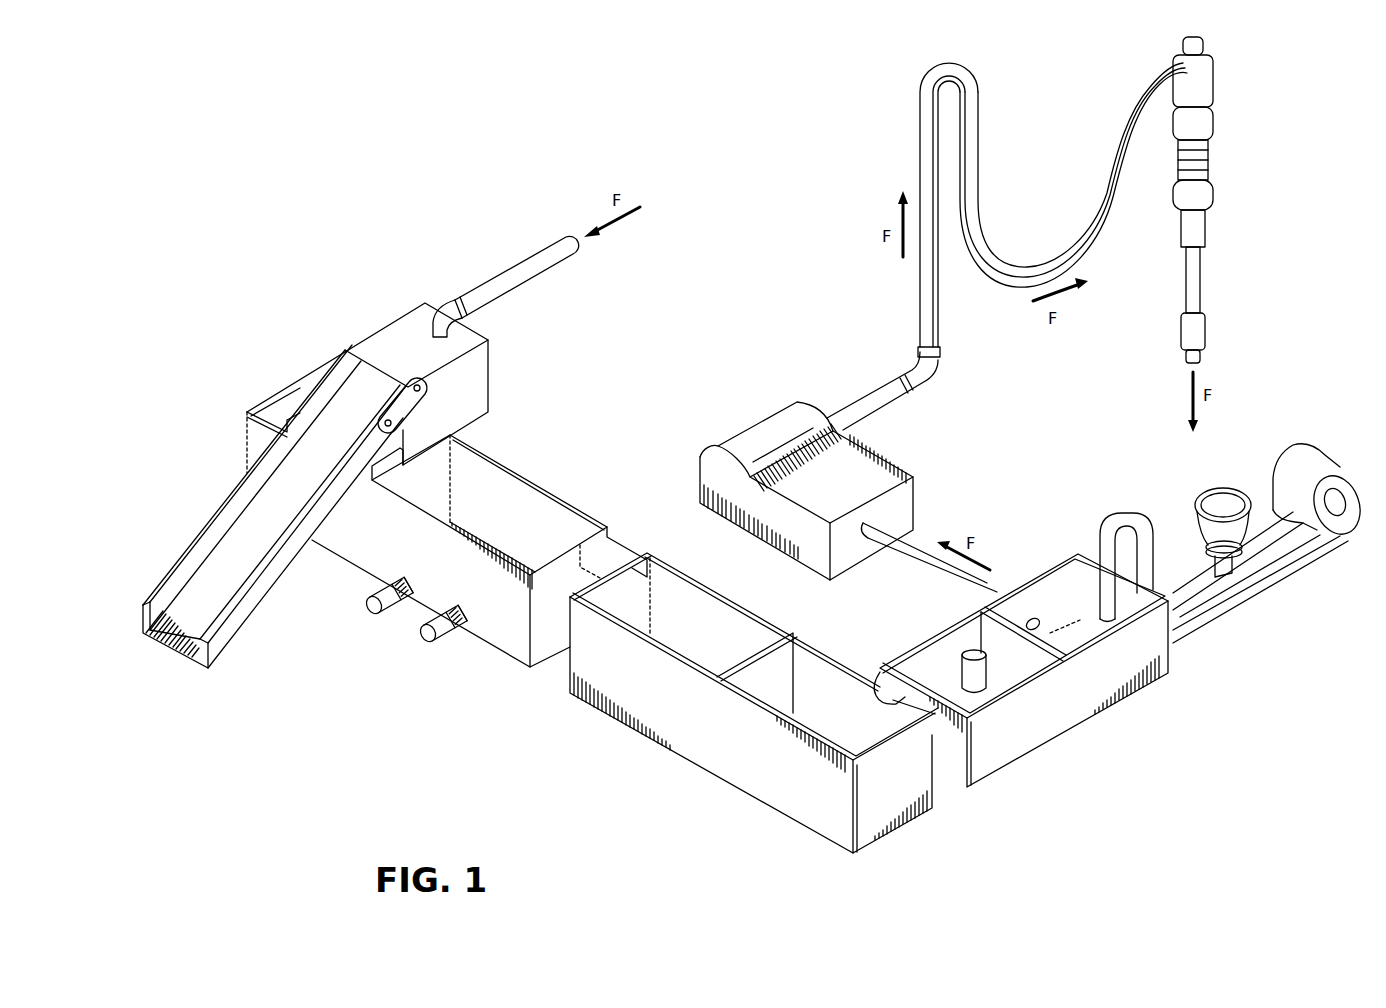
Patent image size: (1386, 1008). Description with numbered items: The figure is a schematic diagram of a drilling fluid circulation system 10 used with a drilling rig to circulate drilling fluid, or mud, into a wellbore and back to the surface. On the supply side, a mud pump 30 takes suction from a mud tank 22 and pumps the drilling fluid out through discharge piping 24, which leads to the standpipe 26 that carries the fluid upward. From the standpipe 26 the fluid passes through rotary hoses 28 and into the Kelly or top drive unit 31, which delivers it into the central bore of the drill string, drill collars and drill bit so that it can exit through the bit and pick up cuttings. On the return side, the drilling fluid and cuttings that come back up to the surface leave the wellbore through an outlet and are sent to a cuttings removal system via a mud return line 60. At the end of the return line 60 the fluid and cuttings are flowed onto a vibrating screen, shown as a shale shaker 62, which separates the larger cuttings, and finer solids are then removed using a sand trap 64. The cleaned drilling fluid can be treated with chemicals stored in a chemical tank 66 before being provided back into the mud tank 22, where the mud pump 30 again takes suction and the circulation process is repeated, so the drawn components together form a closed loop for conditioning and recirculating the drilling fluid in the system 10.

The drilling fluid circulation system 10 is at (636, 133).
The mud tank 22 is at (1067, 730).
The discharge piping 24 is at (890, 405).
The standpipe 26 is at (940, 323).
The rotary hoses 28 is at (1025, 267).
The mud pump 30 is at (750, 427).
The Kelly or top drive unit 31 is at (1205, 283).
The mud return line 60 is at (505, 273).
The shale shaker 62 is at (493, 377).
The sand trap 64 is at (532, 473).
The chemical tank 66 is at (987, 674).